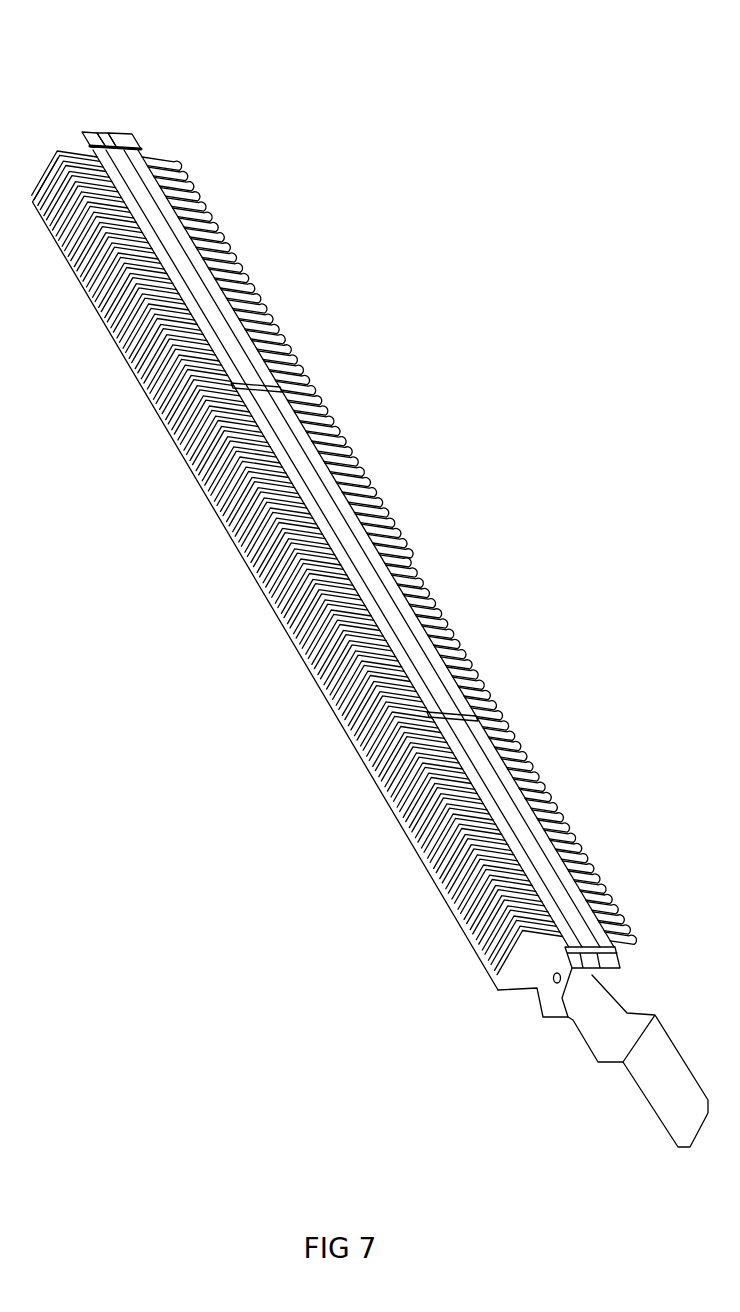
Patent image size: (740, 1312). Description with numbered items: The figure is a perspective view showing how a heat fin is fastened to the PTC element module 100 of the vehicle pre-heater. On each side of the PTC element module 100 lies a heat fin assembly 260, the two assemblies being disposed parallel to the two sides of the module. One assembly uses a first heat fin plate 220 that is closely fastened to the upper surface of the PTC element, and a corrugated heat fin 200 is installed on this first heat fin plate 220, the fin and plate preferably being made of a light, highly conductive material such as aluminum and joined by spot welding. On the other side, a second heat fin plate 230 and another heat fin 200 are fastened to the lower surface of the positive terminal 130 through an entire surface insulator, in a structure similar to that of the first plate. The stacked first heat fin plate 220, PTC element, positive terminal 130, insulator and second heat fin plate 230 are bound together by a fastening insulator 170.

The PTC element module 100 is at (206, 526).
The positive terminal 130 is at (665, 1098).
The fastening insulator 170 is at (107, 133).
The heat fin 200 is at (60, 157).
The first heat fin plate 220 is at (88, 133).
The second heat fin plate 230 is at (128, 133).
The heat fin assembly 260 is at (13, 77).